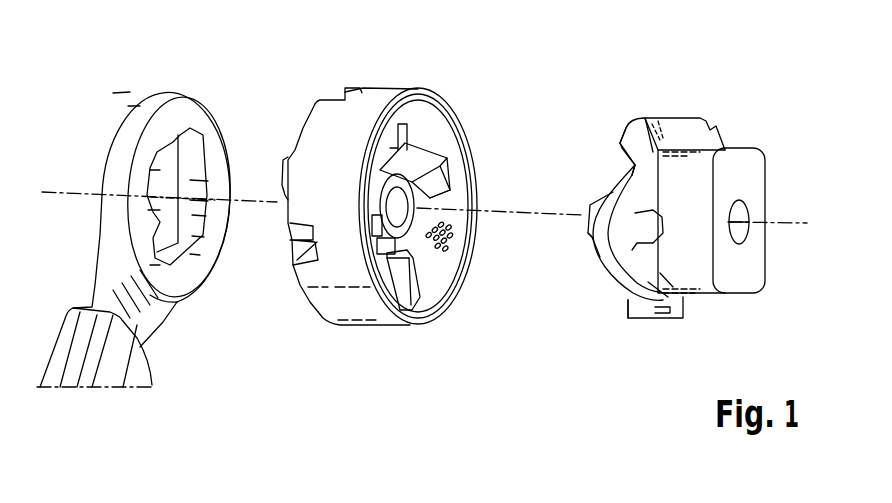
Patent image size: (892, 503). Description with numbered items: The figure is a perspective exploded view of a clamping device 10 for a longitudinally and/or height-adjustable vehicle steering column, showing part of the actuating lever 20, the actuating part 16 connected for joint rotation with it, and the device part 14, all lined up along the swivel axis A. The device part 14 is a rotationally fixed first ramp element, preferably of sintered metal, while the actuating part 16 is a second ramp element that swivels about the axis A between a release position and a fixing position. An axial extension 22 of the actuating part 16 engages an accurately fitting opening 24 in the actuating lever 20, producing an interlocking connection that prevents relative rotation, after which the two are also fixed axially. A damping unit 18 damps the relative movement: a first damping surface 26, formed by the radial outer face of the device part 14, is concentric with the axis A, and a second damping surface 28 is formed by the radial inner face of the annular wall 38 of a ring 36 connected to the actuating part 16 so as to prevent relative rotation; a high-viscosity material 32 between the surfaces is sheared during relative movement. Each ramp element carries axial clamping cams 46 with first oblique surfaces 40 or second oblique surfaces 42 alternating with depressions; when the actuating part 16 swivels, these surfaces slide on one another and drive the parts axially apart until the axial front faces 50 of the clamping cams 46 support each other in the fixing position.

The clamping device 10 is at (282, 88).
The device part 14 is at (720, 123).
The actuating part 16 is at (460, 100).
The damping unit 18 is at (588, 88).
The actuating lever 20 is at (140, 338).
The axial extension 22 is at (277, 225).
The opening 24 is at (170, 182).
The first damping surface 26 is at (630, 152).
The second damping surface 28 is at (440, 138).
The high-viscosity material 32 is at (447, 243).
The ring 36 is at (459, 290).
The annular wall 38 is at (433, 280).
The first oblique surfaces 40 is at (630, 167).
The second oblique surfaces 42 is at (413, 157).
The axial clamping cams 46 is at (390, 288).
The axial front faces 50 is at (445, 178).
The axis A is at (43, 191).